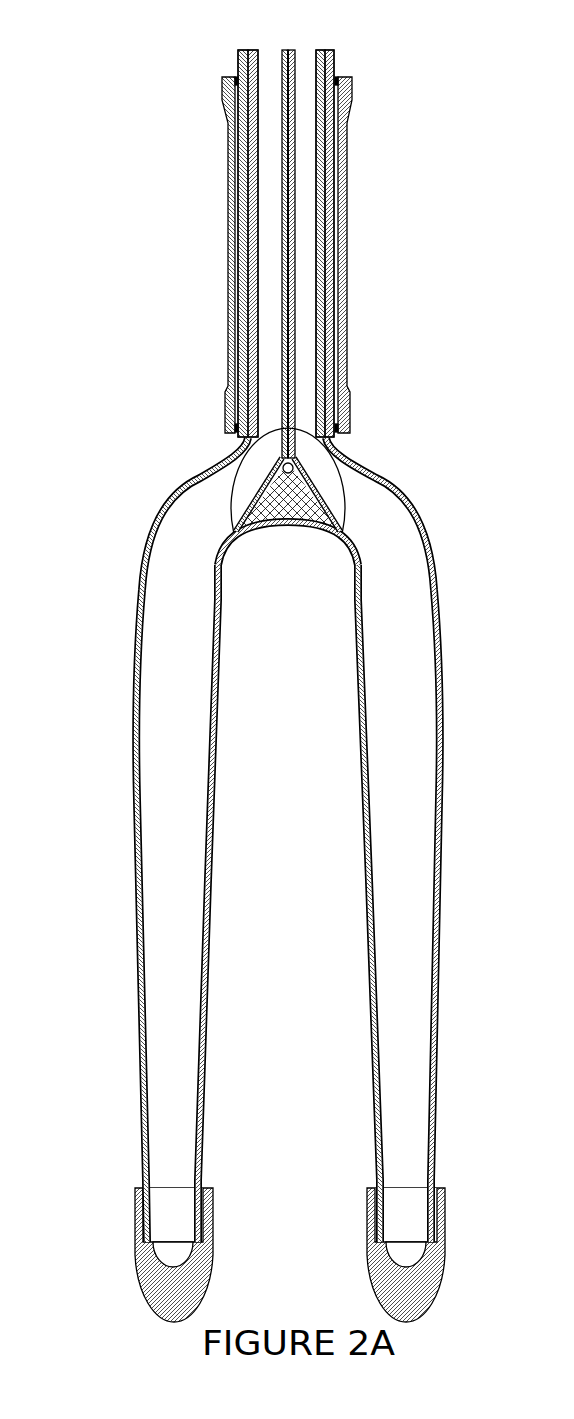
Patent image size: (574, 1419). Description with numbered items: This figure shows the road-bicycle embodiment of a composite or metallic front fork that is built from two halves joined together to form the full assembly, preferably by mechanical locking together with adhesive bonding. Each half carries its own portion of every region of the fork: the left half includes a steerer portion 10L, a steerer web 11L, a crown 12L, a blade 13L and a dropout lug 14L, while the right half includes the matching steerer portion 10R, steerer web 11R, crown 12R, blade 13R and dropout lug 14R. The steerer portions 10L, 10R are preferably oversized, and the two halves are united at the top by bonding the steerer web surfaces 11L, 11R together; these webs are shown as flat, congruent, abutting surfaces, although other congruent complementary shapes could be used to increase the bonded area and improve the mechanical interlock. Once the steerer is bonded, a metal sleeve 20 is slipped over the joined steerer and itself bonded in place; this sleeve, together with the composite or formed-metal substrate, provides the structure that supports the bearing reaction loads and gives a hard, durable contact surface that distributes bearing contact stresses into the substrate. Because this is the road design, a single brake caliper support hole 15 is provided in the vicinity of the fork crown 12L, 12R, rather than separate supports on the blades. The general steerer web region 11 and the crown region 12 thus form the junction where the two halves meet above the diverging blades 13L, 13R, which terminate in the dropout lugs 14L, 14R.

The steerer portion 10L is at (238, 50).
The steerer portion 10R is at (334, 50).
The steerer web 11L is at (294, 185).
The steerer web 11R is at (295, 185).
The sleeve 11 is at (229, 270).
The metal sleeve 20 is at (336, 262).
The brake caliper support hole 15 is at (282, 465).
The fork crown 12 is at (281, 528).
The crown 12L is at (183, 481).
The crown 12R is at (403, 492).
The blade 13L is at (137, 862).
The blade 13R is at (442, 890).
The dropout lug 14L is at (135, 1240).
The dropout lug 14R is at (447, 1240).